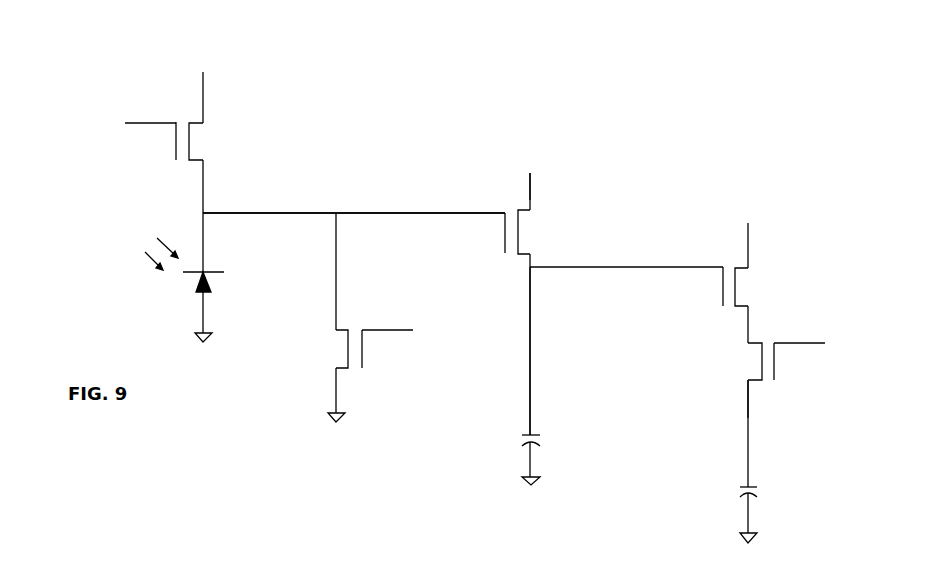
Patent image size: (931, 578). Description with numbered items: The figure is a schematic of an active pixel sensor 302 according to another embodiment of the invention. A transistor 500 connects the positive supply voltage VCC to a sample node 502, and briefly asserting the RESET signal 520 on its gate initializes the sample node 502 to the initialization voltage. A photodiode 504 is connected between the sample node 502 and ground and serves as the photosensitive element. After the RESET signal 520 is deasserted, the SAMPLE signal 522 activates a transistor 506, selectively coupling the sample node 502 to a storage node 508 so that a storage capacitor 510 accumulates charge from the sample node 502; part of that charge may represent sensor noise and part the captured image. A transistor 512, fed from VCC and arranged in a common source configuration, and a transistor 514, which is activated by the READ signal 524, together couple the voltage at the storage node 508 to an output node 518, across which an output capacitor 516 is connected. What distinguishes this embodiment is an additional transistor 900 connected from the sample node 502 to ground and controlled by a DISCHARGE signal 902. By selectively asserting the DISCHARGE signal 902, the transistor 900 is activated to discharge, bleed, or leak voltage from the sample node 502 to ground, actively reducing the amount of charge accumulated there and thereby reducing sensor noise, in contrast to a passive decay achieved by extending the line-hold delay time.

The pixel sensor 302 is at (705, 92).
The transistor 500 is at (226, 128).
The RESET signal 520 is at (98, 142).
The sample node 502 is at (352, 211).
The photodiode 504 is at (210, 277).
The transistor 900 is at (320, 317).
The DISCHARGE signal 902 is at (424, 359).
The transistor 506 is at (460, 220).
The SAMPLE signal 522 is at (526, 160).
The storage node 508 is at (537, 281).
The storage capacitor 510 is at (555, 376).
The transistor 512 is at (775, 267).
The transistor 514 is at (734, 380).
The READ signal 524 is at (832, 345).
The output node 518 is at (748, 418).
The output capacitor 516 is at (773, 510).